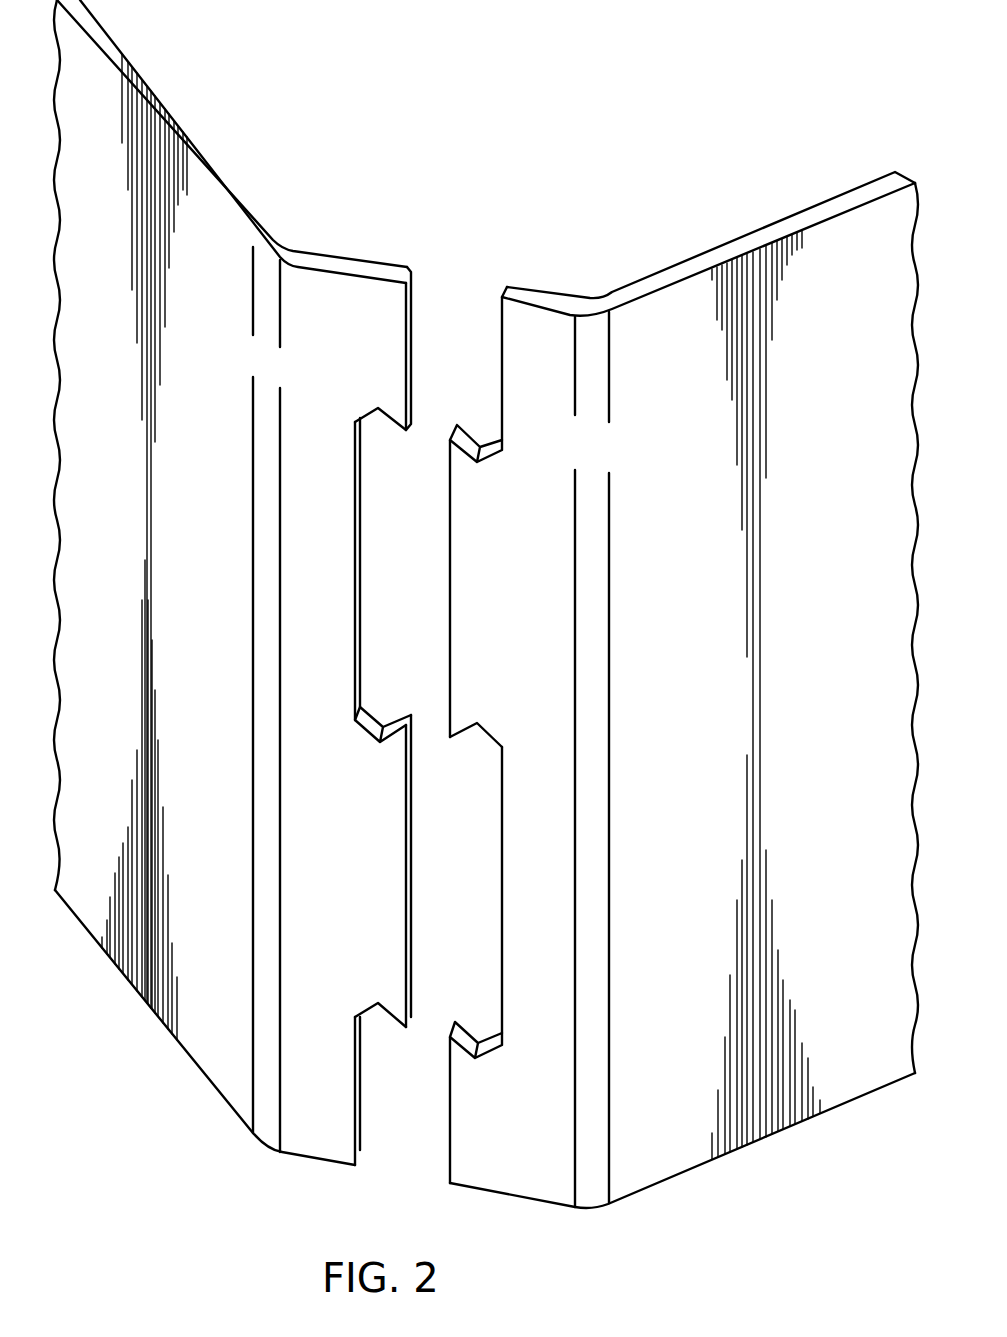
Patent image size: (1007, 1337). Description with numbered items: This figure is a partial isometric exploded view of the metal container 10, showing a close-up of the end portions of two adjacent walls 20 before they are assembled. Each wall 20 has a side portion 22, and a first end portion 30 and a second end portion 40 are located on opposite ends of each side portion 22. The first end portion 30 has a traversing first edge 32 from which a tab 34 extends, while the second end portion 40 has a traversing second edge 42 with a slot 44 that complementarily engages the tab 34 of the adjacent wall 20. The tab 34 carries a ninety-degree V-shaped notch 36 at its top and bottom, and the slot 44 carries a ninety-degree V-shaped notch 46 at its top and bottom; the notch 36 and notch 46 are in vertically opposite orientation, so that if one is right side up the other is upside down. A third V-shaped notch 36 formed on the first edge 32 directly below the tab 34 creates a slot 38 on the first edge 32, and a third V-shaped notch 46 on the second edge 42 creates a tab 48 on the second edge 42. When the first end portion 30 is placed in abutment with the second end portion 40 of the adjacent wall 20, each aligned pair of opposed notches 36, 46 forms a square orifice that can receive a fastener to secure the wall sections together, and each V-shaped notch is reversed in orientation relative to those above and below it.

The metal container 10 is at (532, 91).
The wall 20 is at (205, 1083).
The side portion 22 is at (148, 83).
The first end portion 30 is at (538, 296).
The first edge 32 is at (450, 1183).
The tab 34 is at (458, 578).
The V-shaped notch 36 is at (468, 440).
The slot 38 is at (493, 835).
The second end portion 40 is at (343, 262).
The second edge 42 is at (355, 1165).
The slot 44 is at (377, 627).
The V-shaped notch 46 is at (370, 420).
The tab 48 is at (397, 897).